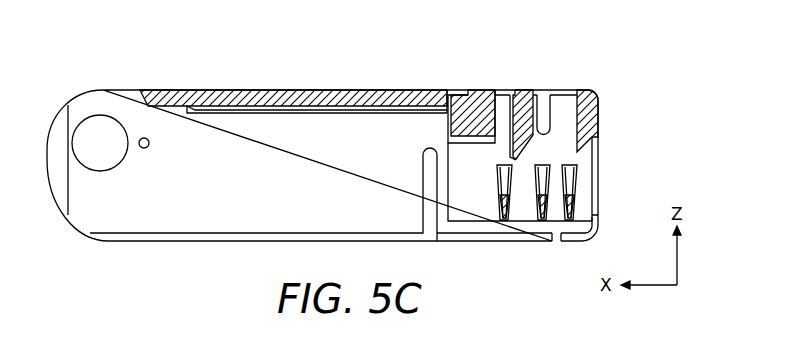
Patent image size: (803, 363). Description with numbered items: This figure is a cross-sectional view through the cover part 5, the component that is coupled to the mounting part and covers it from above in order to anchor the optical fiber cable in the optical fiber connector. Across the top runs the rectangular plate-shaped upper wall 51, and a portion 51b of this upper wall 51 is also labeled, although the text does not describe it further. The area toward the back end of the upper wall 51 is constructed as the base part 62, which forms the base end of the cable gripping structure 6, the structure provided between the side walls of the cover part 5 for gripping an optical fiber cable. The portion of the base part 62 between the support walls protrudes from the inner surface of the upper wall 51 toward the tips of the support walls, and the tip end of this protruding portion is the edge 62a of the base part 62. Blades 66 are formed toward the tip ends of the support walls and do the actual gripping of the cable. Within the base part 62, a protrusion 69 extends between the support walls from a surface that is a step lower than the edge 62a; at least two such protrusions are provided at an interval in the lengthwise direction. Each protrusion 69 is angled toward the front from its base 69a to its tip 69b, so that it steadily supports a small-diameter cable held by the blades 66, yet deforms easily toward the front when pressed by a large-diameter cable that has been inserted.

The cover part 5 is at (180, 90).
The upper wall 51 is at (329, 91).
The base part 62 is at (293, 75).
The thin plate portion 51b is at (417, 112).
The edge of the base part 62a is at (451, 151).
The protrusion 69 is at (512, 101).
The base of the protrusion 69a is at (548, 93).
The tip of the protrusion 69b is at (511, 157).
The cable gripping structure 6 is at (608, 128).
The blade 66 is at (568, 192).